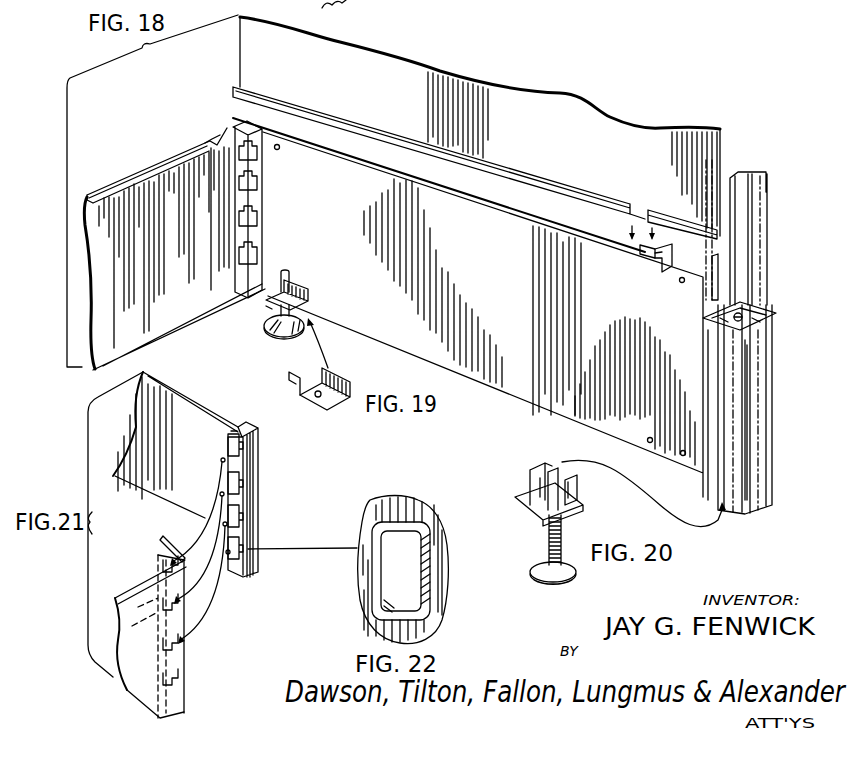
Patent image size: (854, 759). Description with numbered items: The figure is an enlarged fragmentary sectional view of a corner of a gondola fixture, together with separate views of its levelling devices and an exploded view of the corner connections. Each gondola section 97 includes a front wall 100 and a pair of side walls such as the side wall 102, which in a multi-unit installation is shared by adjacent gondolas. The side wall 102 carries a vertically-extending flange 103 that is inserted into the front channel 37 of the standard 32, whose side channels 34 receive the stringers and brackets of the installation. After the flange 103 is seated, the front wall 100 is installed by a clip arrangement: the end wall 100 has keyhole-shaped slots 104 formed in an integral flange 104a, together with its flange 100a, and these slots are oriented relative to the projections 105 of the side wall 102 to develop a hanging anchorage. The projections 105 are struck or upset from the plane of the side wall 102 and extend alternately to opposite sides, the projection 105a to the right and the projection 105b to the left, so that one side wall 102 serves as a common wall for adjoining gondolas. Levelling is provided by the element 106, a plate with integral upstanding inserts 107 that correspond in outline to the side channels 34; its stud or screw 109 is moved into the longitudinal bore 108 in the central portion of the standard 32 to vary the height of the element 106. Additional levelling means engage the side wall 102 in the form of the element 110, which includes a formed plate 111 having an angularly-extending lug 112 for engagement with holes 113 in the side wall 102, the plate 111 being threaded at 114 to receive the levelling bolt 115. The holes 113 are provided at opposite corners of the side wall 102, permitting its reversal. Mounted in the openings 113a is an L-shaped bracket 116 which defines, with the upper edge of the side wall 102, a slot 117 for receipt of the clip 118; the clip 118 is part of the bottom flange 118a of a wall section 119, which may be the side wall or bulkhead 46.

In FIG. 18, the front wall 100 is at (162, 190).
In FIG. 21, the front wall 100 is at (130, 692).
In FIG. 18, the flange of side panel 100a is at (218, 130).
In FIG. 18, the keyhole-shaped slots 104 is at (252, 133).
In FIG. 21, the keyhole-shaped slots 104 is at (132, 626).
In FIG. 21, the integral flange 104a is at (160, 547).
In FIG. 18, the wall section 119 is at (575, 98).
In FIG. 18, the side wall or bulkhead 46 is at (480, 126).
In FIG. 18, the bottom flange 118a is at (558, 186).
In FIG. 18, the clip 118 is at (641, 204).
In FIG. 18, the slot 117 is at (640, 250).
In FIG. 18, the L-shaped bracket 116 is at (665, 257).
In FIG. 18, the openings 113a is at (650, 272).
In FIG. 18, the side wall 102 is at (471, 295).
In FIG. 21, the side wall 102 is at (184, 467).
In FIG. 18, the holes 113 is at (648, 437).
In FIG. 18, the gondola section 97 is at (490, 400).
In FIG. 18, the formed plate 111 is at (300, 290).
In FIG. 19, the formed plate 111 is at (337, 381).
In FIG. 19, the angularly-extending lug 112 is at (295, 377).
In FIG. 19, the threaded portion 114 is at (318, 400).
In FIG. 18, the levelling element 110 is at (261, 306).
In FIG. 18, the levelling bolt 115 is at (280, 334).
In FIG. 18, the standard 32 is at (772, 332).
In FIG. 18, the front channel 37 is at (762, 369).
In FIG. 18, the side channels 34 is at (752, 314).
In FIG. 18, the bore 108 is at (743, 306).
In FIG. 18, the vertically-extending flange 103 is at (722, 286).
In FIG. 20, the levelling element 106 is at (532, 511).
In FIG. 20, the upstanding inserts 107 is at (537, 470).
In FIG. 20, the stud or screw 109 is at (561, 540).
In FIG. 22, the projections 105 is at (408, 557).
In FIG. 21, the projection 105a is at (233, 433).
In FIG. 21, the projection 105b is at (236, 486).